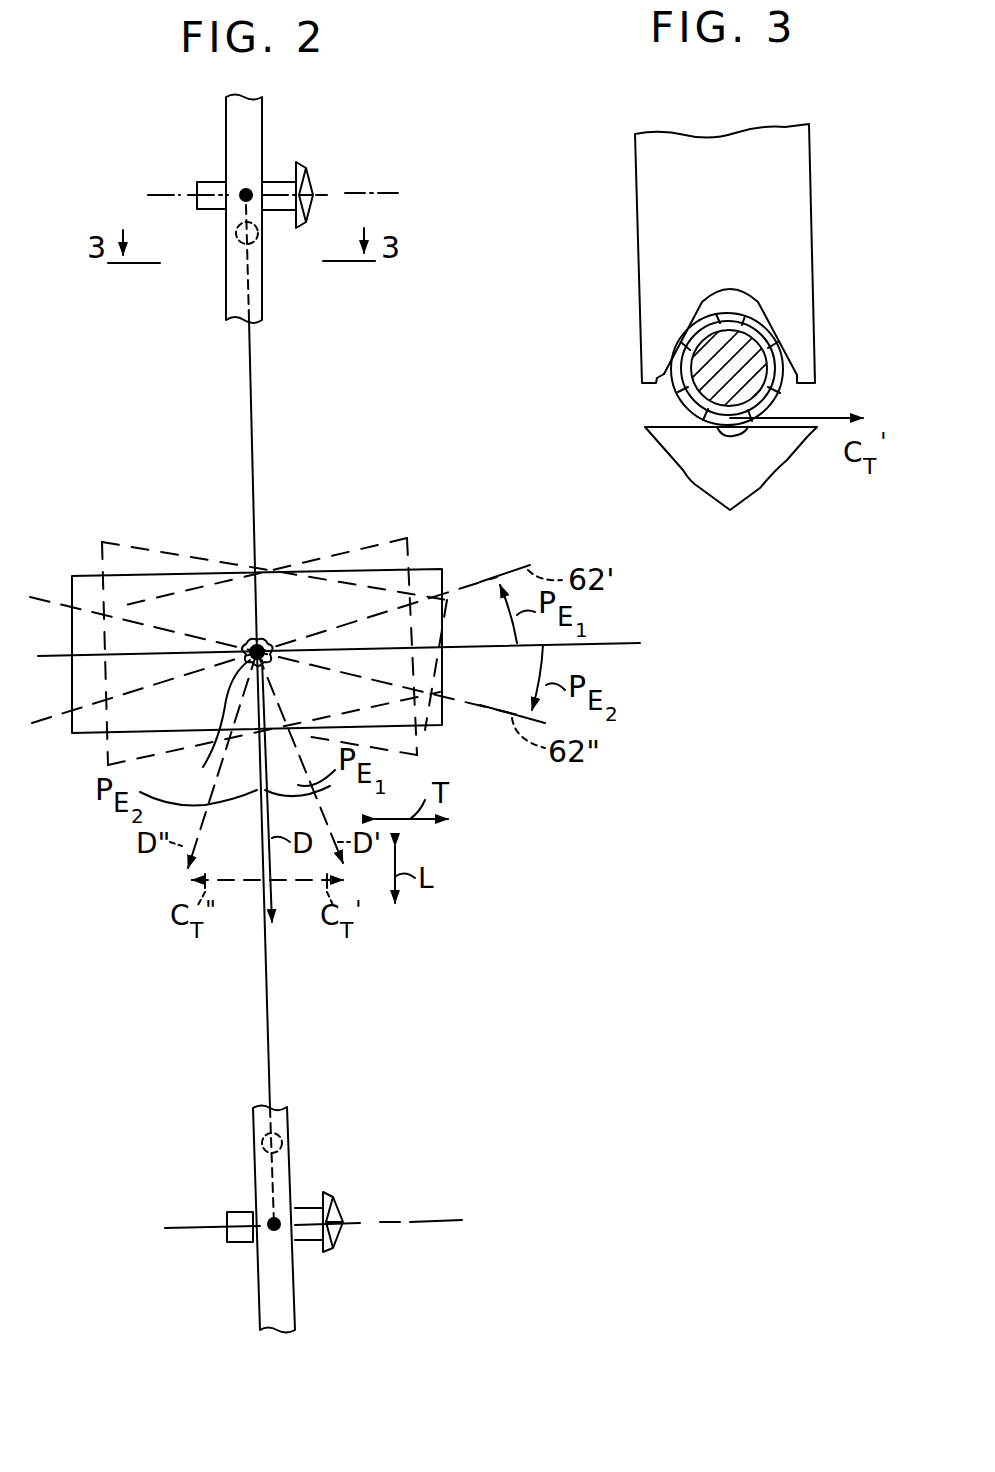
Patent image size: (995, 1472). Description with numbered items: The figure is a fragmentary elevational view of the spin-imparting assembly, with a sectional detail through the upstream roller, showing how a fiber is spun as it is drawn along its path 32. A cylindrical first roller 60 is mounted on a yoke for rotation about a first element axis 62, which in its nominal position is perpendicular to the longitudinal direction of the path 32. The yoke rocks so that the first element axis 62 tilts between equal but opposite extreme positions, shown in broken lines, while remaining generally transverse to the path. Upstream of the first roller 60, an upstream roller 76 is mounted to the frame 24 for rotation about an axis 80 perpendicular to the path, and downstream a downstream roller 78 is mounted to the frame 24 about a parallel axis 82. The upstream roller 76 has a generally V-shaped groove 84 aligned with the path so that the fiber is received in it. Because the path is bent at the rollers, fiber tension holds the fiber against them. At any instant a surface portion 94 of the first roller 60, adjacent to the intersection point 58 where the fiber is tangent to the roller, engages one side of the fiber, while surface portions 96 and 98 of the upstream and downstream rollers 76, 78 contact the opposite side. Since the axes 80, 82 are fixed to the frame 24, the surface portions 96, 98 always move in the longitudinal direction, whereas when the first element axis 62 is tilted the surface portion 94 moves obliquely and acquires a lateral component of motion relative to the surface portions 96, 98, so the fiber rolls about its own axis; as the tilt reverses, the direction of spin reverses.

In FIG. 2, the frame 24 is at (337, 1195).
In FIG. 2, the path 32 is at (253, 438).
In FIG. 3, the path 32 is at (780, 396).
In FIG. 2, the intersection point 58 is at (264, 635).
In FIG. 2, the first roller 60 is at (85, 568).
In FIG. 3, the first roller 60 is at (753, 472).
In FIG. 2, the first element axis 62 is at (605, 644).
In FIG. 2, the upstream roller 76 is at (278, 143).
In FIG. 3, the upstream roller 76 is at (625, 341).
In FIG. 2, the downstream roller 78 is at (312, 1146).
In FIG. 2, the axis 80 is at (376, 191).
In FIG. 2, the axis 82 is at (420, 1218).
In FIG. 3, the V-shaped groove 84 is at (660, 388).
In FIG. 2, the surface portion 94 is at (209, 726).
In FIG. 3, the surface portion 94 is at (683, 470).
In FIG. 2, the surface portion 96 is at (230, 254).
In FIG. 3, the surface portion 96 is at (782, 305).
In FIG. 2, the surface portion 98 is at (257, 1143).